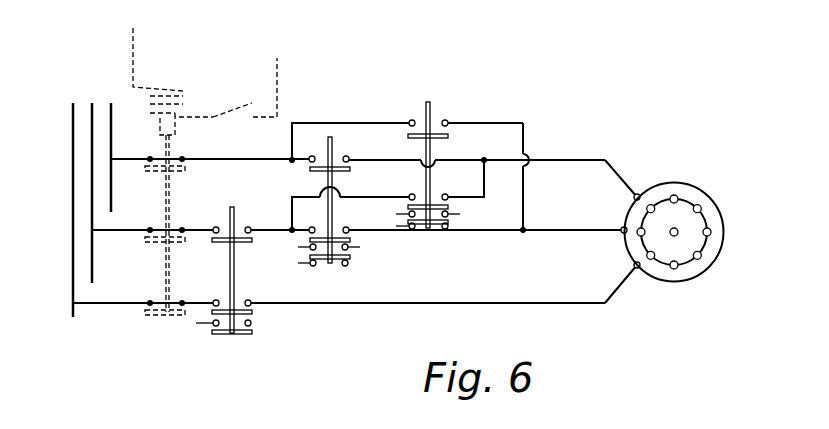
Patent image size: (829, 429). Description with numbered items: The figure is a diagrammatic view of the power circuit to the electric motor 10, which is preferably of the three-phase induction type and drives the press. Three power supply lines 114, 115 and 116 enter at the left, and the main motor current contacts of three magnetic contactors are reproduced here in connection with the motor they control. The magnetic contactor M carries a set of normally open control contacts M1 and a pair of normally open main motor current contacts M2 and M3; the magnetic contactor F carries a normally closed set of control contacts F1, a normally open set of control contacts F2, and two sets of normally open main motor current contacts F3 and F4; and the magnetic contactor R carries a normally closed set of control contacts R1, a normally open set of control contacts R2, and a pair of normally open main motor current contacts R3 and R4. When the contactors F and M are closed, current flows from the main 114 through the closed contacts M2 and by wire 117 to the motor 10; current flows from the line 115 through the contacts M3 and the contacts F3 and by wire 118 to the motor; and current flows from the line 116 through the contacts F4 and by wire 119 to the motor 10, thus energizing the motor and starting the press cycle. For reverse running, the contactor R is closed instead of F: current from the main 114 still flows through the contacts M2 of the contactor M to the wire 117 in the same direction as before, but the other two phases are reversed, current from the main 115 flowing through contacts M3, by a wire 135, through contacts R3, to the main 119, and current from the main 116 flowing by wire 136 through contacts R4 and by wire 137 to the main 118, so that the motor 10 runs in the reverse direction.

The electric motor 10 is at (724, 225).
The power supply line 114 is at (72, 103).
The power supply line 115 is at (91, 103).
The power supply line 116 is at (111, 103).
The wire 117 is at (451, 304).
The wire 118 is at (547, 234).
The wire 119 is at (551, 159).
The wire 135 is at (345, 205).
The wire 136 is at (361, 117).
The wire 137 is at (526, 189).
The magnetic contactor M is at (241, 270).
The normally open control contacts M1 is at (251, 324).
The normally open main motor current contacts M2 is at (246, 302).
The normally open main motor current contacts M3 is at (241, 228).
The magnetic contactor F is at (319, 200).
The normally closed control contacts F1 is at (348, 265).
The normally open control contacts F2 is at (349, 246).
The normally open main motor current contacts F3 is at (341, 233).
The normally open main motor current contacts F4 is at (342, 164).
The magnetic contactor R is at (416, 165).
The normally closed control contacts R1 is at (449, 226).
The normally open control contacts R2 is at (449, 212).
The normally open main motor current contacts R3 is at (438, 199).
The normally open main motor current contacts R4 is at (442, 128).